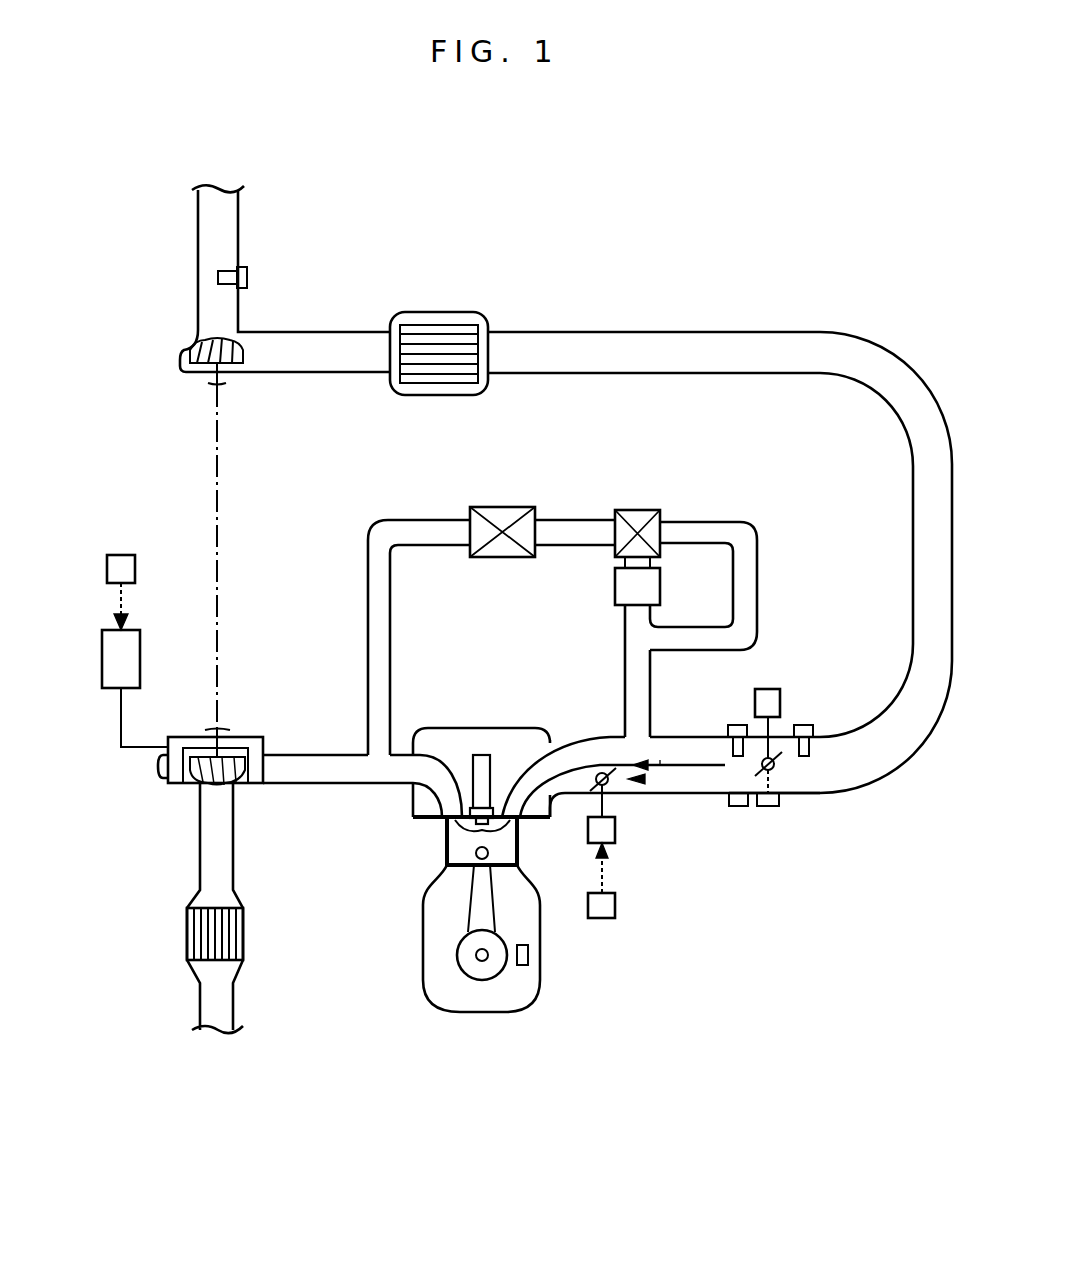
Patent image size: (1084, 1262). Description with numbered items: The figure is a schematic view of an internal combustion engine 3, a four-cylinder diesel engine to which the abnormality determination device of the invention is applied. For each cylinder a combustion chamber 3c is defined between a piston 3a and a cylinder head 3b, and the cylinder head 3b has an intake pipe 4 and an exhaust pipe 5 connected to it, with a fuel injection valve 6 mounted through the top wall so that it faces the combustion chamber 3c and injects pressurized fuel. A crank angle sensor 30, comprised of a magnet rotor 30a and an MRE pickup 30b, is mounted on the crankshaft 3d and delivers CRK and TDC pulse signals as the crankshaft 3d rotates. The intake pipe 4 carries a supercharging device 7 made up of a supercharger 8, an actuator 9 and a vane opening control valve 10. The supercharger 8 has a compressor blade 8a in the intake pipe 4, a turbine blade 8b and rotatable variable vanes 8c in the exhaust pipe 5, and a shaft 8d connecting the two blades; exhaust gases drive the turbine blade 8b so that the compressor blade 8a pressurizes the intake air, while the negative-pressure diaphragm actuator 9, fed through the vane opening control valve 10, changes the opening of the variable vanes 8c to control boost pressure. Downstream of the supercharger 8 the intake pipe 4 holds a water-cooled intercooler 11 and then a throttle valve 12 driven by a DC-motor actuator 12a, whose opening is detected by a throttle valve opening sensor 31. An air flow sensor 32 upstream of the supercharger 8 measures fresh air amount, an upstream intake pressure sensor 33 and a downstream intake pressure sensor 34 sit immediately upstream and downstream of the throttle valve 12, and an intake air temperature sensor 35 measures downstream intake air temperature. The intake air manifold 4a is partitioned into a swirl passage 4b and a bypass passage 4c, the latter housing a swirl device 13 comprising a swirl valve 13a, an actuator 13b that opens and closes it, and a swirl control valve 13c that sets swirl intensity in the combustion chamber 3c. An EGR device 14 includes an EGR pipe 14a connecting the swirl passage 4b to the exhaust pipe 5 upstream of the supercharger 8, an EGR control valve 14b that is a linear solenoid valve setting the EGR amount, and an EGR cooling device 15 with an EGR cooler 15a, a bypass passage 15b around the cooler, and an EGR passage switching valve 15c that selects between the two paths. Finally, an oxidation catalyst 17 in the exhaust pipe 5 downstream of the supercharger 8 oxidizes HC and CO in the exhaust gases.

The internal combustion engine 3 is at (458, 923).
The piston 3a is at (447, 862).
The cylinder head 3b is at (413, 815).
The combustion chamber 3c is at (460, 828).
The crankshaft 3d is at (480, 955).
The intake pipe 4 is at (198, 232).
The intake air manifold 4a is at (662, 737).
The swirl passage 4b is at (645, 779).
The bypass passage 4c is at (660, 765).
The exhaust pipe 5 is at (310, 755).
The fuel injection valve 6 is at (483, 765).
The supercharging device 7 is at (191, 908).
The supercharger 8 is at (212, 549).
The compressor blade 8a is at (245, 362).
The turbine blade 8b is at (240, 790).
The variable vanes 8c is at (178, 788).
The shaft 8d is at (213, 515).
The actuator 9 is at (102, 660).
The vane opening control valve 10 is at (107, 565).
The intercooler 11 is at (442, 312).
The throttle valve 12 is at (788, 707).
The actuator 12a is at (768, 689).
The swirl device 13 is at (676, 897).
The swirl valve 13a is at (612, 780).
The actuator 13b is at (617, 838).
The swirl control valve 13c is at (617, 912).
The EGR device 14 is at (468, 575).
The EGR pipe 14a is at (368, 615).
The EGR control valve 14b is at (482, 505).
The EGR cooling device 15 is at (692, 534).
The EGR cooler 15a is at (614, 590).
The bypass passage 15b is at (760, 525).
The EGR passage switching valve 15c is at (648, 510).
The oxidation catalyst 17 is at (246, 933).
The crank angle sensor 30 is at (510, 1032).
The magnet rotor 30a is at (487, 980).
The MRE pickup 30b is at (523, 967).
The throttle valve opening sensor 31 is at (773, 806).
The air flow sensor 32 is at (247, 278).
The upstream intake pressure sensor 33 is at (810, 725).
The downstream intake pressure sensor 34 is at (738, 725).
The intake air temperature sensor 35 is at (742, 806).